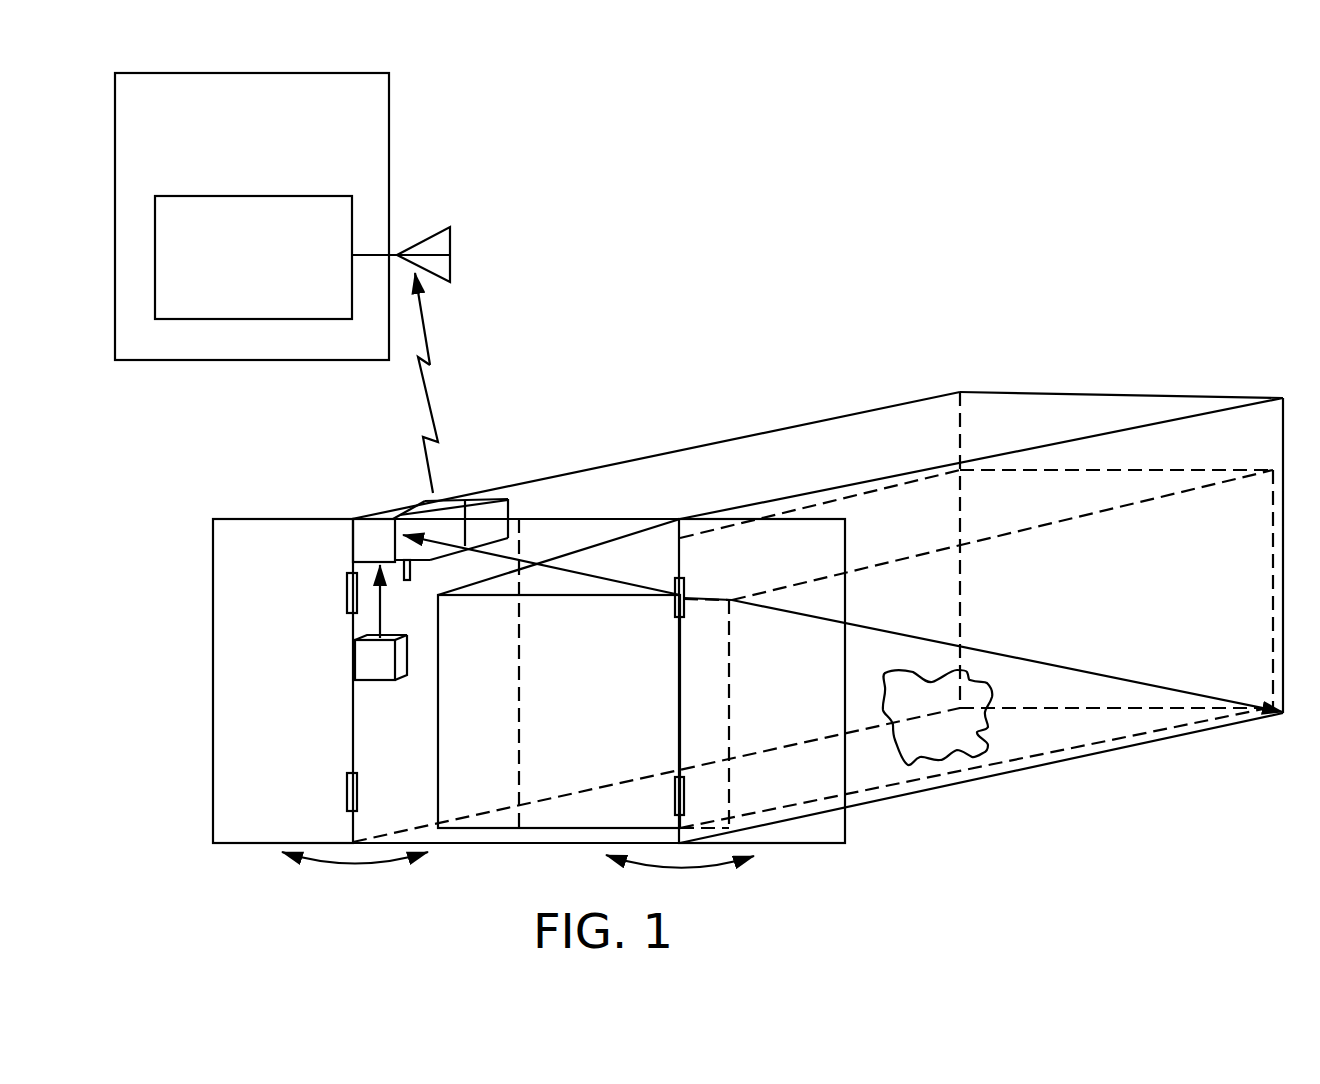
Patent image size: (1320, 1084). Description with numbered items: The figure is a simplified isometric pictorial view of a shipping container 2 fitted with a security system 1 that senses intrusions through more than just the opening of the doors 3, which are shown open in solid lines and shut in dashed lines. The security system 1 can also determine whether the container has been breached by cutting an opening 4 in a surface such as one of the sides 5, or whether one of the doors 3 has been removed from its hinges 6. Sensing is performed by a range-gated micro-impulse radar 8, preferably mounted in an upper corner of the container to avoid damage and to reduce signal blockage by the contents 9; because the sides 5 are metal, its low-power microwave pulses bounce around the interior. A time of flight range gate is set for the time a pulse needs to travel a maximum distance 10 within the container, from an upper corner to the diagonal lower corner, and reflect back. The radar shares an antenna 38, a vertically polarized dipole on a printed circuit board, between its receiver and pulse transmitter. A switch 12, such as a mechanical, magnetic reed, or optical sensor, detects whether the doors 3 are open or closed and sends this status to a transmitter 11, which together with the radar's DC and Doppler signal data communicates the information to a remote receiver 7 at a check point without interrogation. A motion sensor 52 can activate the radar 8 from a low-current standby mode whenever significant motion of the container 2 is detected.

The security system 1 is at (513, 393).
The shipping container 2 is at (1035, 412).
The doors 3 is at (240, 540).
The opening 4 is at (953, 735).
The sides 5 is at (1083, 610).
The hinges 6 is at (347, 595).
The remote receiver 7 is at (237, 212).
The range-gated micro-impulse radar 8 is at (373, 542).
The contents 9 is at (596, 696).
The maximum distance 10 is at (985, 648).
The transmitter 11 is at (467, 513).
The switch 12 is at (373, 667).
The antenna 38 is at (410, 568).
The motion sensor 52 is at (475, 483).